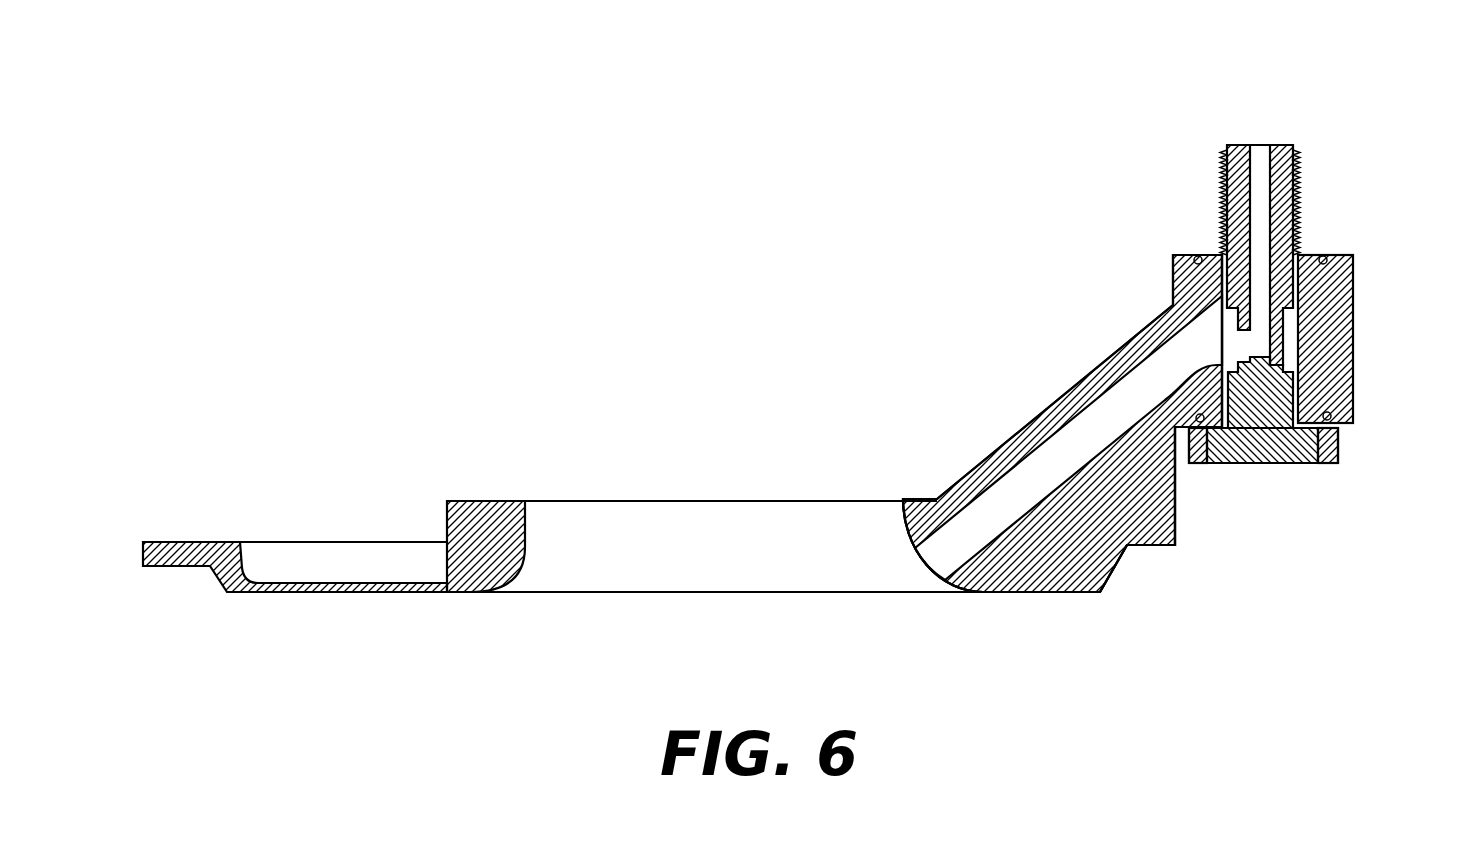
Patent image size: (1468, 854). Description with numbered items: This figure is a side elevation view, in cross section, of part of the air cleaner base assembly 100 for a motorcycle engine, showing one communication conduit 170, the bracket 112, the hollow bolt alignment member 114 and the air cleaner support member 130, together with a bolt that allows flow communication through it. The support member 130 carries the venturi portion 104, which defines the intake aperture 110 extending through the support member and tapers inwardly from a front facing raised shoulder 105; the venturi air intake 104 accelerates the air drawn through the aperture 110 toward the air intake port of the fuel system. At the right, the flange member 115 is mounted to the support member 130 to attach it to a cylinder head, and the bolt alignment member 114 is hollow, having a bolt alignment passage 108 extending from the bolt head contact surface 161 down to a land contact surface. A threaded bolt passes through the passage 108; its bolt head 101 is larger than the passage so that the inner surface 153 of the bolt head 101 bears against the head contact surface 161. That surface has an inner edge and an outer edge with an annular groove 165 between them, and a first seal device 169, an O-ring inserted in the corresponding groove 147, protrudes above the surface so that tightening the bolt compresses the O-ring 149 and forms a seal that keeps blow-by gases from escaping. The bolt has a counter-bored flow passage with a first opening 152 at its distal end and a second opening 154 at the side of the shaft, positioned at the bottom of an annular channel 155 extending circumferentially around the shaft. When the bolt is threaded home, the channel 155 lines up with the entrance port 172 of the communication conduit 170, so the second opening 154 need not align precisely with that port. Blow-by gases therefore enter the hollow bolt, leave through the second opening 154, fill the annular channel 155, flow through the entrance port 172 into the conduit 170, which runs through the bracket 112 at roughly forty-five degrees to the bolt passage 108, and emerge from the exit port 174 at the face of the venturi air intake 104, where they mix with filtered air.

The air cleaner base assembly 100 is at (335, 408).
The bolt head 101 is at (1255, 466).
The venturi portion 104 is at (517, 557).
The raised shoulder 105 is at (327, 597).
The bolt alignment passage 108 is at (1295, 400).
The intake aperture 110 is at (720, 537).
The bracket 112 is at (1042, 410).
The bolt alignment member 114 is at (1353, 307).
The flange member 115 is at (882, 395).
The air cleaner support member 130 is at (203, 532).
The annular groove 147 is at (1200, 428).
The O-ring 149 is at (1318, 468).
The first opening 152 is at (1258, 150).
The inner surface of bolt head 153 is at (1340, 432).
The second opening 154 is at (1243, 337).
The annular channel 155 is at (1290, 347).
The bolt head contact surface 161 is at (1353, 425).
The annular groove 165 is at (1325, 256).
The first seal device 169 is at (1197, 257).
The communication conduit 170 is at (1028, 488).
The entrance port 172 is at (1208, 342).
The exit port 174 is at (937, 552).